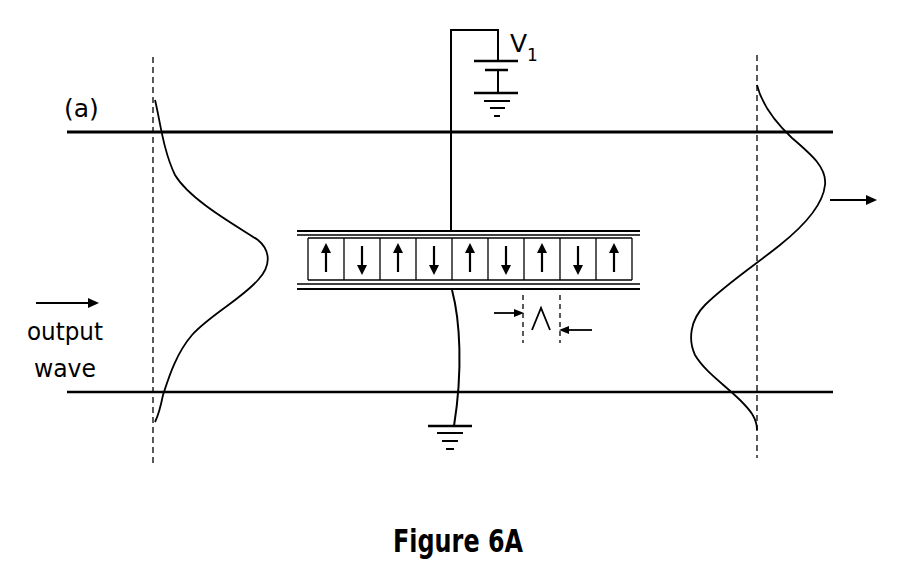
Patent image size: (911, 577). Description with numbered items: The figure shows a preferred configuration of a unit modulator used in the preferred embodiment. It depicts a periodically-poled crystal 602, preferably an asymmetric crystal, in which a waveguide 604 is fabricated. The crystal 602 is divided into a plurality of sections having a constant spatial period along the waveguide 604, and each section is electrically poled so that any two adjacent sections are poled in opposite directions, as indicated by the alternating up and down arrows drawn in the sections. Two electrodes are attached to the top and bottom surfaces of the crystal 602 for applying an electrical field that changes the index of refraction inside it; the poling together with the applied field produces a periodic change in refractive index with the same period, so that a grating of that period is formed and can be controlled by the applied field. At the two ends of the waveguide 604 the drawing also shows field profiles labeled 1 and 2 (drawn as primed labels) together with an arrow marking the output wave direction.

The periodically-poled crystal 602 is at (450, 239).
The waveguide 604 is at (642, 243).
The wave 1′ (input/pump mode) 1 is at (784, 257).
The wave 2′ (output wave mode) 2 is at (211, 261).